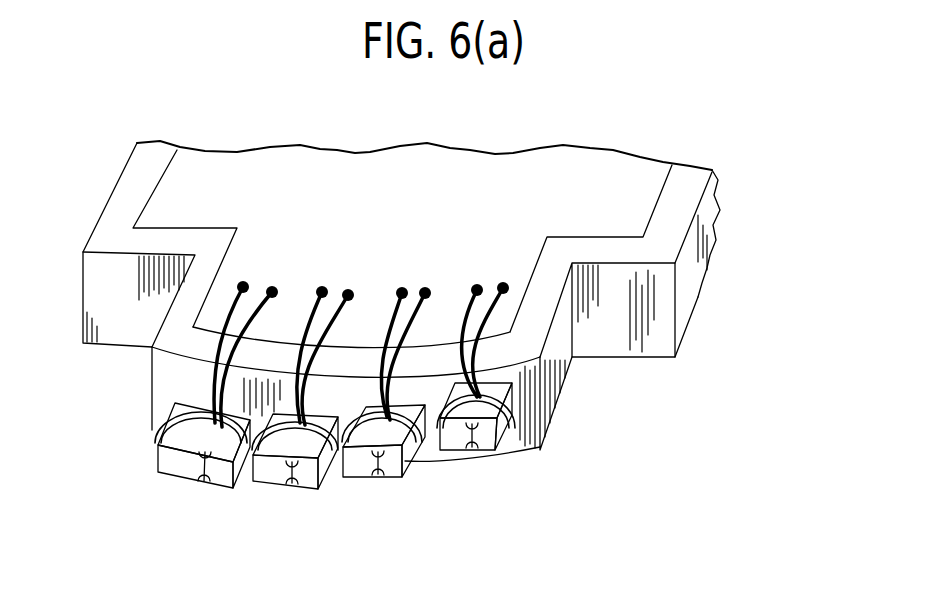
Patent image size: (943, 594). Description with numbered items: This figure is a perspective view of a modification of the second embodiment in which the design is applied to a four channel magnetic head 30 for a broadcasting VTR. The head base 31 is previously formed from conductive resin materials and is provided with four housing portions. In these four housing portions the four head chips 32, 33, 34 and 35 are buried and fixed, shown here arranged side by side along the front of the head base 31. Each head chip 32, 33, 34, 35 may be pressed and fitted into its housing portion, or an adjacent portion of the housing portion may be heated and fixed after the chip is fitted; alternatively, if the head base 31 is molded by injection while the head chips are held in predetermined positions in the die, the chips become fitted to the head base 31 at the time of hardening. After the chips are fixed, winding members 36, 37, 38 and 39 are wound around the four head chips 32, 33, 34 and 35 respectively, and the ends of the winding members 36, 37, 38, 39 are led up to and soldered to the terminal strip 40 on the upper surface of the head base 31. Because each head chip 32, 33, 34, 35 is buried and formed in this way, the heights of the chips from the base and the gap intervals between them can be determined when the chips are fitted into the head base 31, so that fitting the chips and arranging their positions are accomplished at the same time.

The magnetic head 30 is at (733, 284).
The head base 31 is at (687, 303).
The head chip 32 is at (177, 465).
The head chip 33 is at (265, 482).
The head chip 34 is at (362, 477).
The head chip 35 is at (465, 457).
The winding member 36 is at (153, 431).
The winding member 37 is at (318, 428).
The winding member 38 is at (420, 417).
The winding member 39 is at (497, 407).
The terminal strip 40 is at (633, 197).